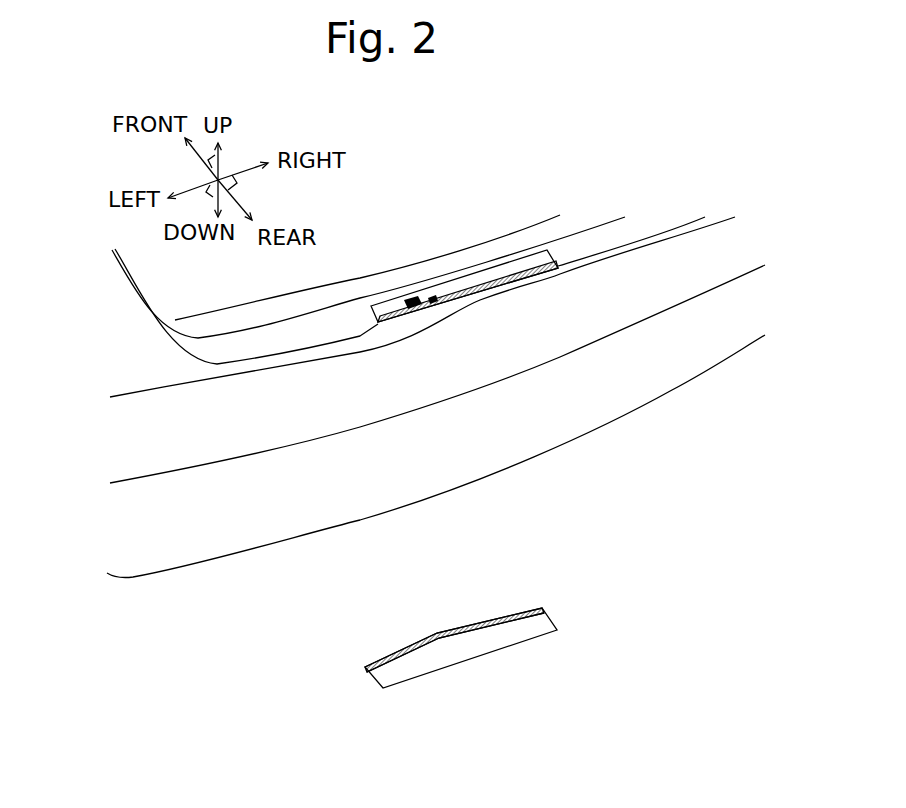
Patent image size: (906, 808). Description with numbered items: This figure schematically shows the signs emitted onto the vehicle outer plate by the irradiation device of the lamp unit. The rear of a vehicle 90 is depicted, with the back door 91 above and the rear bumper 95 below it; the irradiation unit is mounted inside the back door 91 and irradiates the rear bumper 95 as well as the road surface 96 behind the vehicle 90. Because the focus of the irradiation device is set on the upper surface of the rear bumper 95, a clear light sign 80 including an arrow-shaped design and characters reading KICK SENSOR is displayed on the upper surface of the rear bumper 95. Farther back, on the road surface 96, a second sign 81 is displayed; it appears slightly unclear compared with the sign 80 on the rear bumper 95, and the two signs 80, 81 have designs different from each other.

The sign 80 is at (517, 258).
The sign 81 is at (490, 640).
The vehicle 90 is at (220, 608).
The back door 91 is at (580, 138).
The rear bumper 95 is at (320, 322).
The road surface 96 is at (518, 582).